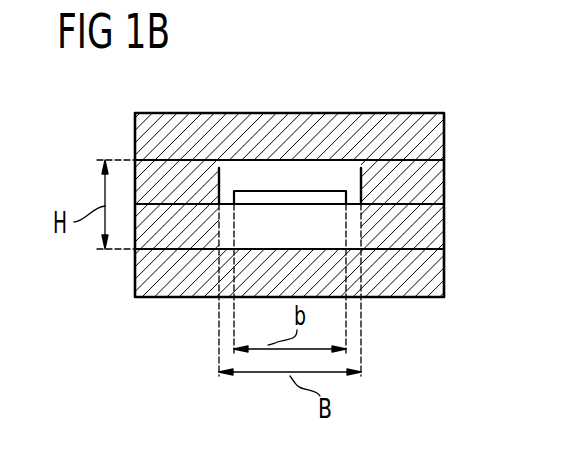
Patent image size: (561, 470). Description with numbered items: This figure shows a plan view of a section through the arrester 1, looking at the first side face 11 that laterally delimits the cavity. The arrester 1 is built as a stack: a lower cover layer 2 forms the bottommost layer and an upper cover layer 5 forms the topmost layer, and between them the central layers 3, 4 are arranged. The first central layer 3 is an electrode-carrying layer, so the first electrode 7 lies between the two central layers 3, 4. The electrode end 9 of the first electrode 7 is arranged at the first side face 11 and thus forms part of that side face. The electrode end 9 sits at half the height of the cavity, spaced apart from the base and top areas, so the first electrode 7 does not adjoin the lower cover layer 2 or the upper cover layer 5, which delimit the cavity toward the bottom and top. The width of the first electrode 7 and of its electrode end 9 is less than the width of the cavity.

The arrester 1 is at (433, 73).
The lower cover layer 2 is at (437, 273).
The first central layer 3 is at (437, 228).
The second central layer 4 is at (436, 182).
The upper cover layer 5 is at (436, 128).
The first electrode 7 is at (303, 196).
The electrode end 9 is at (333, 196).
The first side face 11 is at (274, 228).